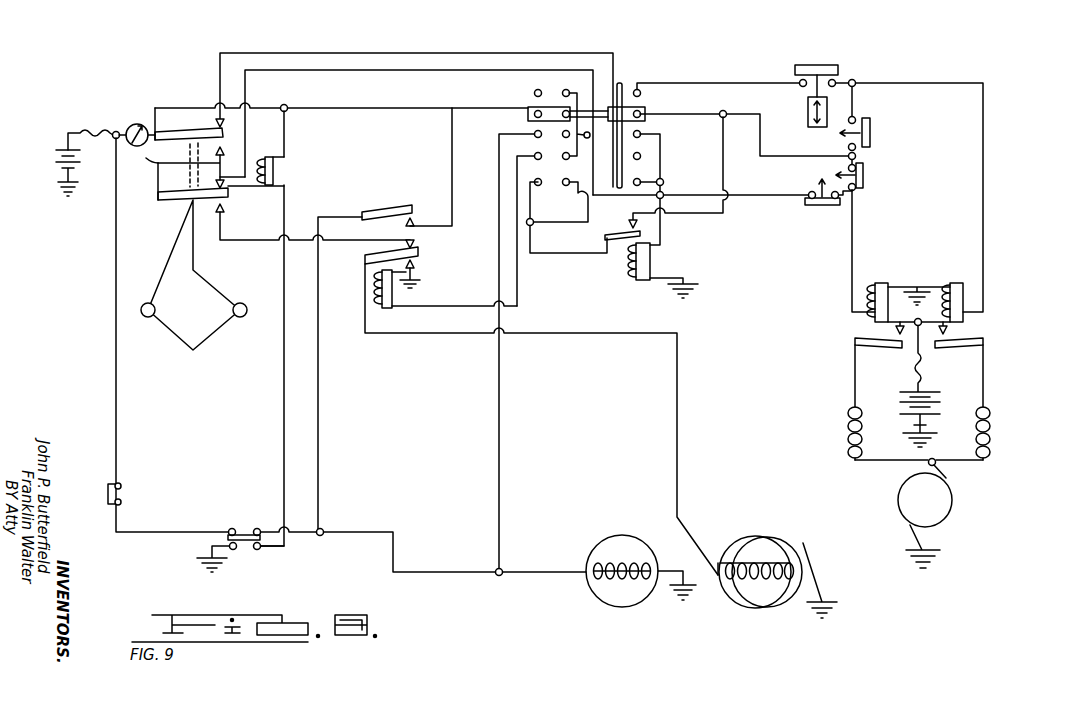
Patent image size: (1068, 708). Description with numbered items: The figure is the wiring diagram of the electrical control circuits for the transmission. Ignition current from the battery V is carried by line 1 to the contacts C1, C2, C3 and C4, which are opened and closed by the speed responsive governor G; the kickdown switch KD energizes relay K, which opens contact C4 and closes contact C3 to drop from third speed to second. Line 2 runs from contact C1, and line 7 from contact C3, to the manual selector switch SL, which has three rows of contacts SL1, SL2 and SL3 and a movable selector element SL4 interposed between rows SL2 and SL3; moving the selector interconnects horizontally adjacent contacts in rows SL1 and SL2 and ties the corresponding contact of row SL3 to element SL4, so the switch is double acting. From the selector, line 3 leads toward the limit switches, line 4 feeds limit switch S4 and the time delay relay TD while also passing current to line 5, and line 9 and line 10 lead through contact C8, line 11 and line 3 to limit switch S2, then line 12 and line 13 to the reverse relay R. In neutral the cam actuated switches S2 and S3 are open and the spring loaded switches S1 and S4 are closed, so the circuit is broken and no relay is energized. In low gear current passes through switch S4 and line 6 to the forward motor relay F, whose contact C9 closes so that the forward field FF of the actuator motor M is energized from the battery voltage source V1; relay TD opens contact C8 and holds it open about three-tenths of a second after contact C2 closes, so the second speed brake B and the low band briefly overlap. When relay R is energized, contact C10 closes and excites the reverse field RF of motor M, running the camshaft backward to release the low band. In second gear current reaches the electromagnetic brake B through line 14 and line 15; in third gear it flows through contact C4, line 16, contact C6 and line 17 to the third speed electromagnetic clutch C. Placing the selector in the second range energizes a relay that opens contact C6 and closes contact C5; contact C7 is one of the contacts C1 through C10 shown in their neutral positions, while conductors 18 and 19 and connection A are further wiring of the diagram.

The line 1 is at (118, 131).
The battery V is at (56, 158).
The line 2 is at (342, 58).
The line 7 is at (392, 80).
The conductor 19 is at (284, 398).
The contact C1 is at (214, 121).
The contact C2 is at (233, 149).
The contact C3 is at (226, 183).
The contact C4 is at (224, 208).
The relay K is at (264, 171).
The speed responsive governor G is at (185, 352).
The line 16 is at (320, 242).
The contact C5 is at (421, 224).
The line 14 is at (497, 214).
The contact C6 is at (415, 243).
The contact C7 is at (418, 270).
The line 4 is at (445, 289).
The line 17 is at (610, 333).
The manual selector switch SL is at (639, 78).
The row of contacts SL1 is at (534, 93).
The row of contacts SL2 is at (566, 89).
The row of contacts SL3 is at (641, 90).
The movable selector element SL4 is at (620, 82).
The line 3 is at (688, 113).
The line 11 is at (726, 176).
The conductor A is at (662, 153).
The line 5 is at (746, 204).
The line 9 is at (558, 228).
The line 10 is at (578, 254).
The contact C8 is at (622, 225).
The time delay relay TD is at (664, 270).
The conductor 18 is at (738, 86).
The limit switch S1 is at (824, 44).
The line 12 is at (856, 103).
The line 13 is at (983, 190).
The limit switch S2 is at (871, 131).
The limit switch S3 is at (864, 175).
The limit switch S4 is at (814, 208).
The line 6 is at (856, 232).
The forward motor relay F is at (875, 298).
The reverse relay R is at (964, 300).
The contact C9 is at (893, 336).
The contact C10 is at (948, 336).
The battery voltage source V1 is at (936, 409).
The forward field FF is at (866, 402).
The reverse field winding RF is at (985, 402).
The actuator motor M is at (936, 509).
The kickdown switch KD is at (256, 536).
The line 15 is at (542, 576).
The second speed electromagnetic brake B is at (612, 597).
The third speed electromagnetic clutch C is at (762, 600).